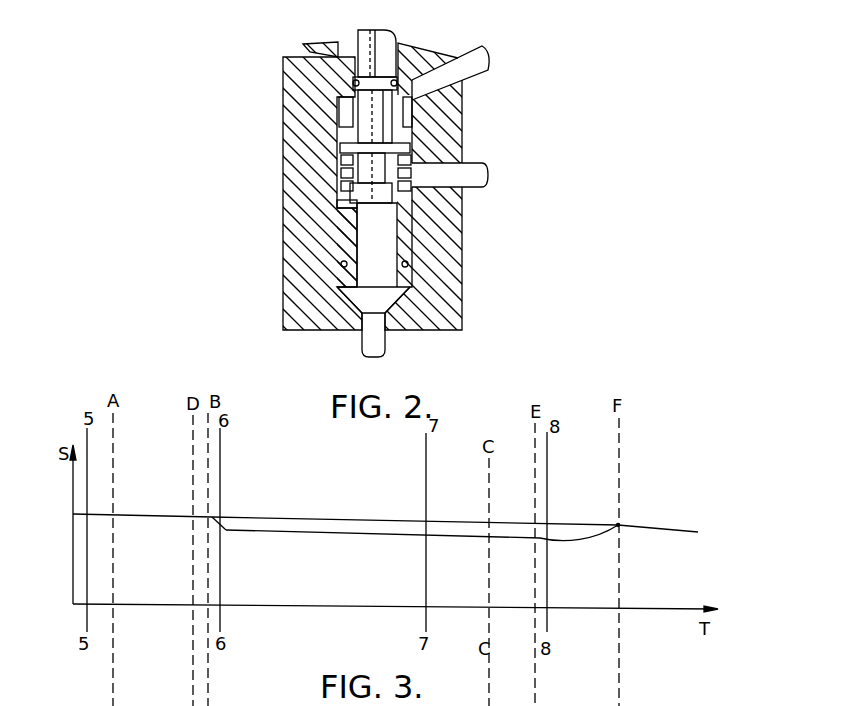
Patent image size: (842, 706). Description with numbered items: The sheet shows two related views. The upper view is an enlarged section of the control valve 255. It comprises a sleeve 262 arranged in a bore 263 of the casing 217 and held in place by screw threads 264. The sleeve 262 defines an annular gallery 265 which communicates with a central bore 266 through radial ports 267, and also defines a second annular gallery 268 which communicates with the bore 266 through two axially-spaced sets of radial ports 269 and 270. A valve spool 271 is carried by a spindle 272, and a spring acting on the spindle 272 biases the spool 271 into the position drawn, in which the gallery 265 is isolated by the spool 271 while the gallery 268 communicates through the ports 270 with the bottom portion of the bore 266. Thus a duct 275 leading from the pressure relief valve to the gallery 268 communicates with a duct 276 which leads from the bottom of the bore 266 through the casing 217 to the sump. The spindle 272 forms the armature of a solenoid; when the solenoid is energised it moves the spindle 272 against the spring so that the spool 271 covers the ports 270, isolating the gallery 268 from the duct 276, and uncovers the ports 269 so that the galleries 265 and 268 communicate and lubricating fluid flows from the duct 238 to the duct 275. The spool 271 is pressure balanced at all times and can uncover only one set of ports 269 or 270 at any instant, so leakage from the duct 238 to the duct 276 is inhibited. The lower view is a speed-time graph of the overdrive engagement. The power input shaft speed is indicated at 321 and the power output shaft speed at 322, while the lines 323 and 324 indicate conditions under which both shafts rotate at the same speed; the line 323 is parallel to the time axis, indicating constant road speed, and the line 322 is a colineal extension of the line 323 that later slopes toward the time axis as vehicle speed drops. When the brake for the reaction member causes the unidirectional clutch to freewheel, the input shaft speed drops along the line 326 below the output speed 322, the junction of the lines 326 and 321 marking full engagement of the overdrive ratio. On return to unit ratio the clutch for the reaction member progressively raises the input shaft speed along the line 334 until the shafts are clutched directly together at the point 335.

In FIG. 2, the casing 217 is at (302, 302).
In FIG. 2, the duct 238 is at (477, 78).
In FIG. 2, the control valve 255 is at (268, 126).
In FIG. 2, the sleeve 262 is at (399, 62).
In FIG. 2, the bore 263 is at (390, 298).
In FIG. 2, the screw threads 264 is at (452, 58).
In FIG. 2, the annular gallery 265 is at (412, 112).
In FIG. 2, the bore 266 is at (363, 130).
In FIG. 2, the radial ports 267 is at (350, 110).
In FIG. 2, the annular gallery 268 is at (413, 178).
In FIG. 2, the radial ports 269 is at (367, 170).
In FIG. 2, the radial ports 270 is at (343, 207).
In FIG. 2, the valve spool 271 is at (357, 177).
In FIG. 2, the spindle 272 is at (368, 38).
In FIG. 2, the duct 275 is at (484, 176).
In FIG. 2, the duct 276 is at (374, 341).
In FIG. 3, the power input shaft speed line 321 is at (393, 535).
In FIG. 3, the power output shaft speed line 322 is at (330, 518).
In FIG. 3, the equal-speed line 323 is at (155, 515).
In FIG. 3, the equal-speed line 324 is at (673, 528).
In FIG. 3, the input speed drop line 326 is at (216, 517).
In FIG. 3, the input speed rise line 334 is at (574, 545).
In FIG. 3, the direct clutching point 335 is at (614, 523).